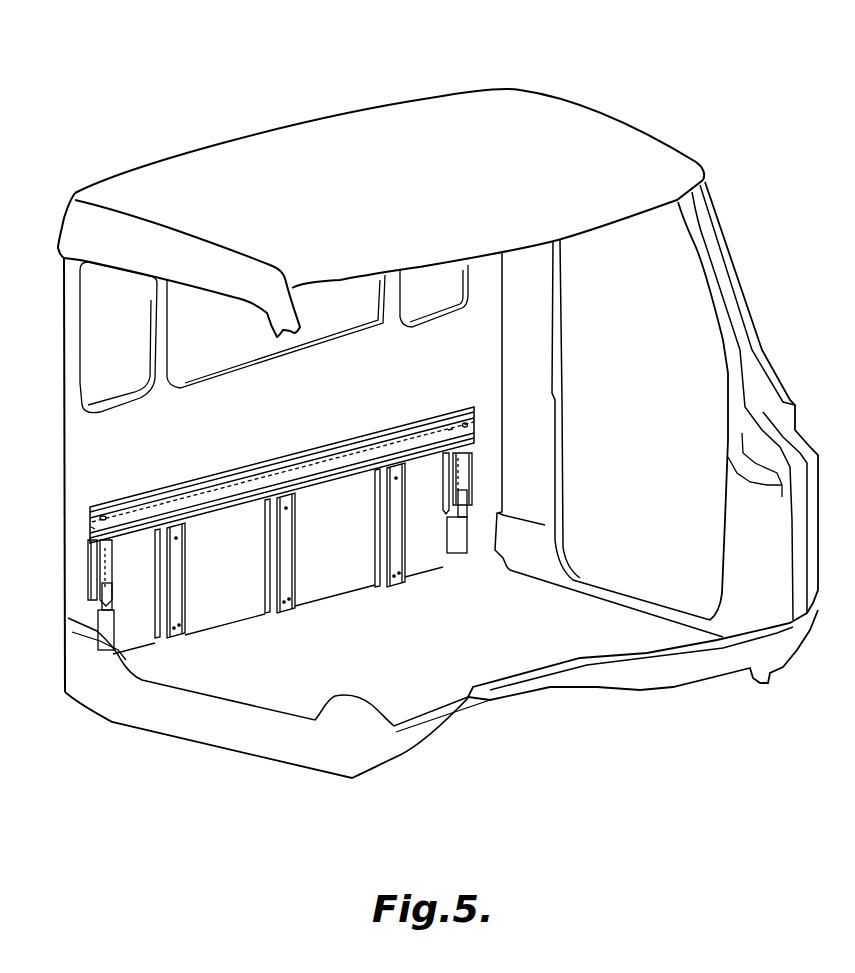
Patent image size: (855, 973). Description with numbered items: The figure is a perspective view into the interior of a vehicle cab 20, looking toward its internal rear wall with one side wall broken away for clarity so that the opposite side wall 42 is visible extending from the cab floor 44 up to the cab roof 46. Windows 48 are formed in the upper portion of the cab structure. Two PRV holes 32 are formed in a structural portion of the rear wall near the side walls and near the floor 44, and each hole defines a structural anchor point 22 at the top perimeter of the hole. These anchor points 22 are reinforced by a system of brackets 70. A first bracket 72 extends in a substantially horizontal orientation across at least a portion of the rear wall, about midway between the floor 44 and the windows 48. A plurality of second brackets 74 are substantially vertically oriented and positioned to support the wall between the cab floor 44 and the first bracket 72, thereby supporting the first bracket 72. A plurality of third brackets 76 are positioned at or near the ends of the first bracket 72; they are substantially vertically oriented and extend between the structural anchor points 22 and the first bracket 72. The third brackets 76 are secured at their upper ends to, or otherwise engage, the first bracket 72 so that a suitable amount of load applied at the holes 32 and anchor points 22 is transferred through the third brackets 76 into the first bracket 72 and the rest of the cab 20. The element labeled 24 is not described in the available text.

The cab 20 is at (358, 90).
The structural anchor points 22 is at (100, 605).
The mounting block 24 is at (98, 600).
The holes 32 is at (112, 616).
The side wall 42 is at (535, 347).
The cab floor 44 is at (283, 693).
The cab roof 46 is at (458, 148).
The windows 48 is at (118, 332).
The system of brackets 70 is at (117, 491).
The first bracket 72 is at (270, 478).
The second brackets 74 is at (182, 592).
The third brackets 76 is at (93, 583).